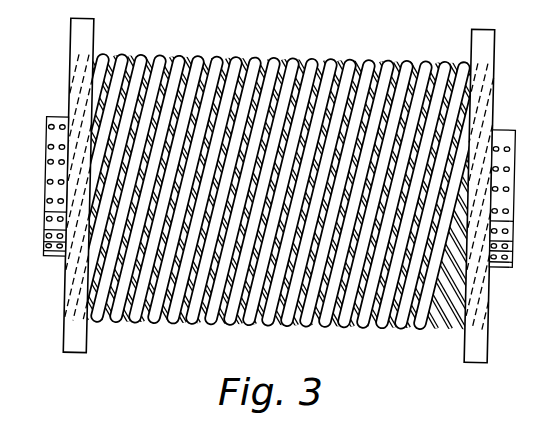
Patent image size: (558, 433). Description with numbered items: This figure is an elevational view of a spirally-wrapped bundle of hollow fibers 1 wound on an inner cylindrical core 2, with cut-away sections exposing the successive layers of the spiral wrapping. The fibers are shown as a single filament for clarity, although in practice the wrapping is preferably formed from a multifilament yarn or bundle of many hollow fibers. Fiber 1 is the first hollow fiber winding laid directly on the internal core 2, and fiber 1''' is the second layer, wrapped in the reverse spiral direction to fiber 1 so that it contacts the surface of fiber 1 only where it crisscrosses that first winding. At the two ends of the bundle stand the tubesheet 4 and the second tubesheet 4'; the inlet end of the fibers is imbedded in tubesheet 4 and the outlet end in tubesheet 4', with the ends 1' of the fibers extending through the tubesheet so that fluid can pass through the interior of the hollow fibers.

The hollow fibers 1 is at (201, 216).
The ends of the fibers 1' is at (280, 167).
The second-layer fiber 1''' is at (240, 216).
The internal core 2 is at (55, 117).
The tubesheet 4 is at (94, 184).
The second tubesheet 4' is at (461, 191).